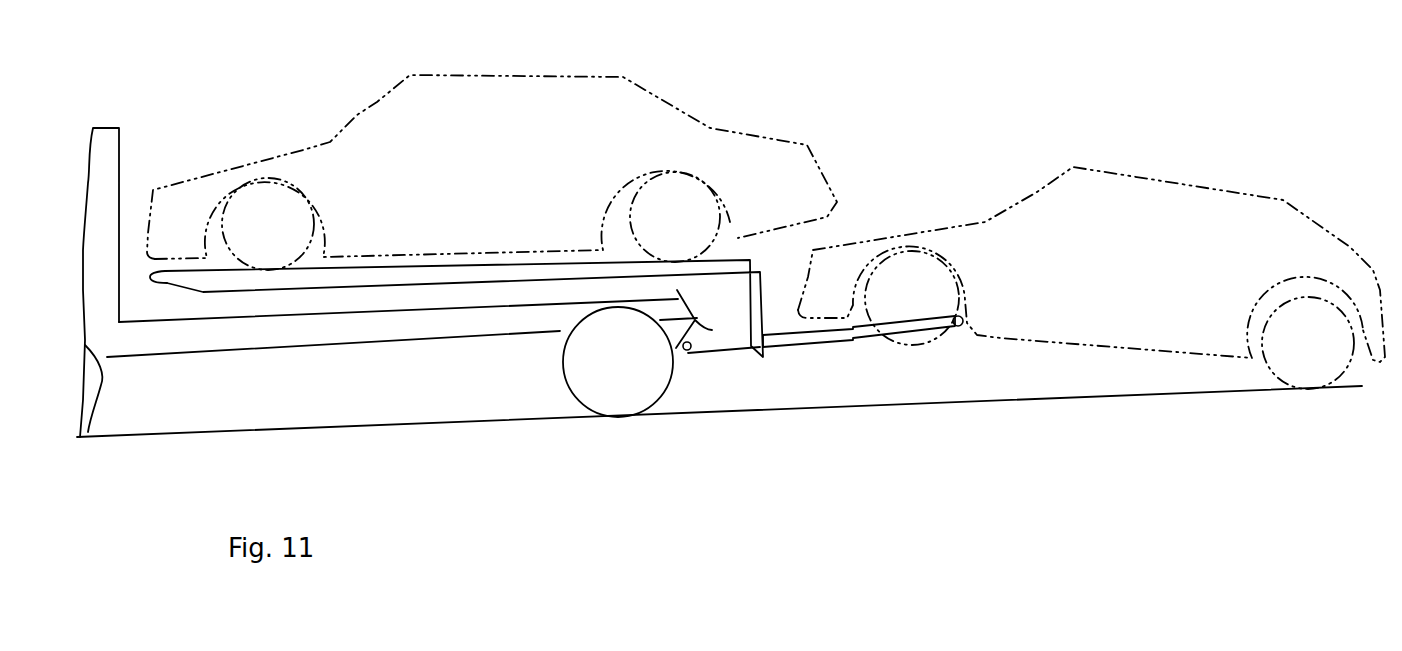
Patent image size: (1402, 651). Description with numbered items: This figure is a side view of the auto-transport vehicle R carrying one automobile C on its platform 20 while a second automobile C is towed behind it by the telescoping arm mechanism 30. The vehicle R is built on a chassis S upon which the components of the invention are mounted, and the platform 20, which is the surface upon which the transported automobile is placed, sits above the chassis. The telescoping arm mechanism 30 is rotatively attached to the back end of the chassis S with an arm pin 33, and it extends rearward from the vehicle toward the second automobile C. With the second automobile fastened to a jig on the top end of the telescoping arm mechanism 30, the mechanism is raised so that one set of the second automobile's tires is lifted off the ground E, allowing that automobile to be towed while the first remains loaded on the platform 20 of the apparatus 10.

The vehicle loading device 10 is at (521, 280).
The platform 20 is at (447, 273).
The telescoping arm mechanism 30 is at (825, 337).
The arm pin 33 is at (689, 350).
The car C is at (510, 107).
The chassis S is at (262, 337).
The auto-transport vehicle R is at (102, 135).
The ground E is at (998, 403).